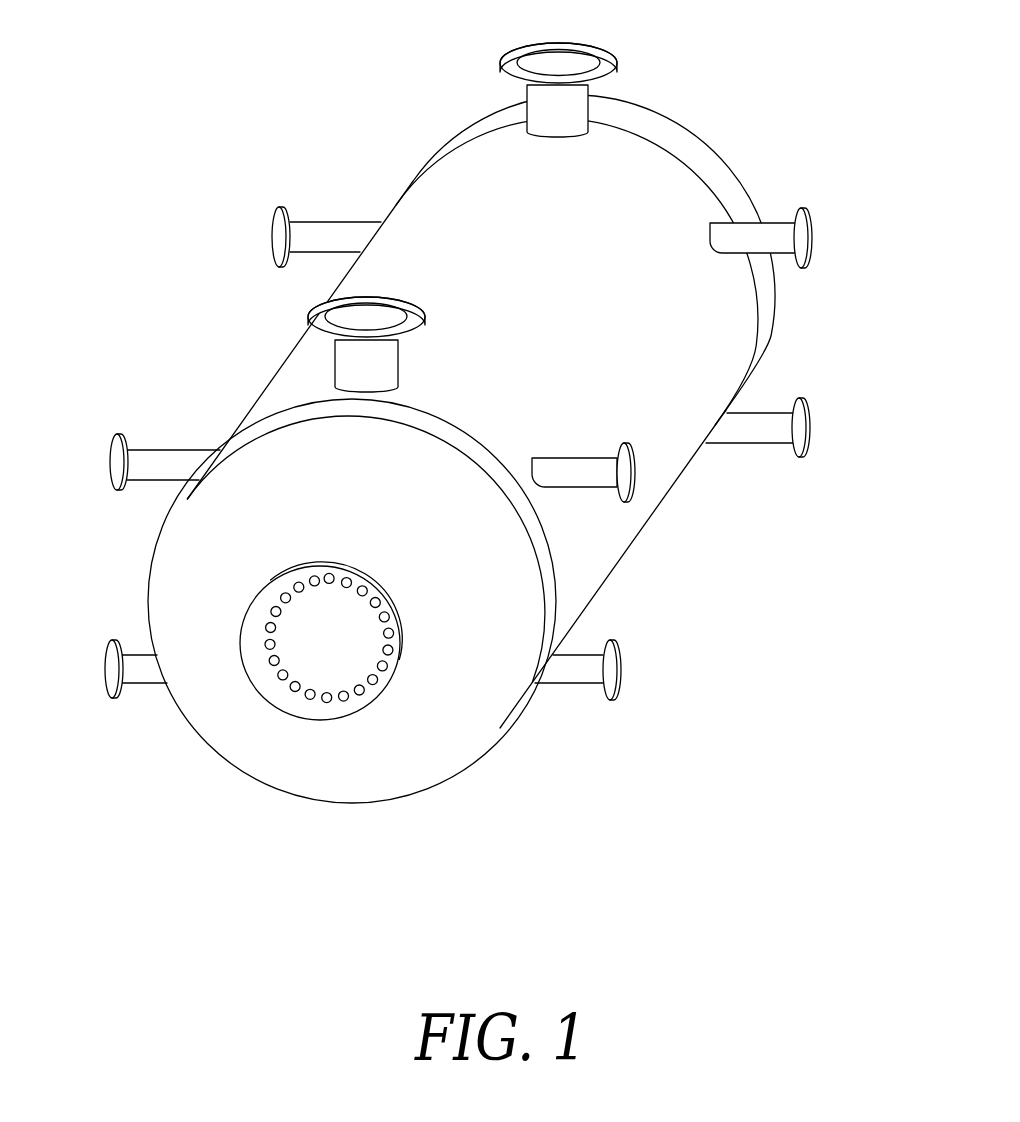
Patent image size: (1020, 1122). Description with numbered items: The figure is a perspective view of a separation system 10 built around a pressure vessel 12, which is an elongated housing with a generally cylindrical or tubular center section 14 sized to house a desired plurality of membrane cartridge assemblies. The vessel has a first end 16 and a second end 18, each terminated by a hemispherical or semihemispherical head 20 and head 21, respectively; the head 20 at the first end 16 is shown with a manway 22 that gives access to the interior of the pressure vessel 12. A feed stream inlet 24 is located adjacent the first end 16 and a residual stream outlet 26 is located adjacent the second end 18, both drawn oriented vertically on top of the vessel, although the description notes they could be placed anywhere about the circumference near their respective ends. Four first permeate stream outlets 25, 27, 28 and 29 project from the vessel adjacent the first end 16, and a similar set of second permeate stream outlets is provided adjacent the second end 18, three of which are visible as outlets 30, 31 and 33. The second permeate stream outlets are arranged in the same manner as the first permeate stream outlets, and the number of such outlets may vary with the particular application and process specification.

The separation system 10 is at (380, 54).
The pressure vessel 12 is at (752, 612).
The center section 14 is at (276, 370).
The first end 16 is at (130, 802).
The second end 18 is at (842, 126).
The head 20 is at (163, 572).
The head 21 is at (696, 134).
The manway 22 is at (307, 662).
The feed stream inlet 24 is at (398, 363).
The first permeate stream outlet 25 is at (625, 670).
The residual stream outlet 26 is at (562, 44).
The first permeate stream outlet 27 is at (104, 668).
The first permeate stream outlet 28 is at (109, 462).
The first permeate stream outlet 29 is at (578, 457).
The second permeate stream outlet 30 is at (271, 236).
The second permeate stream outlet 31 is at (816, 237).
The second permeate stream outlet 33 is at (813, 427).